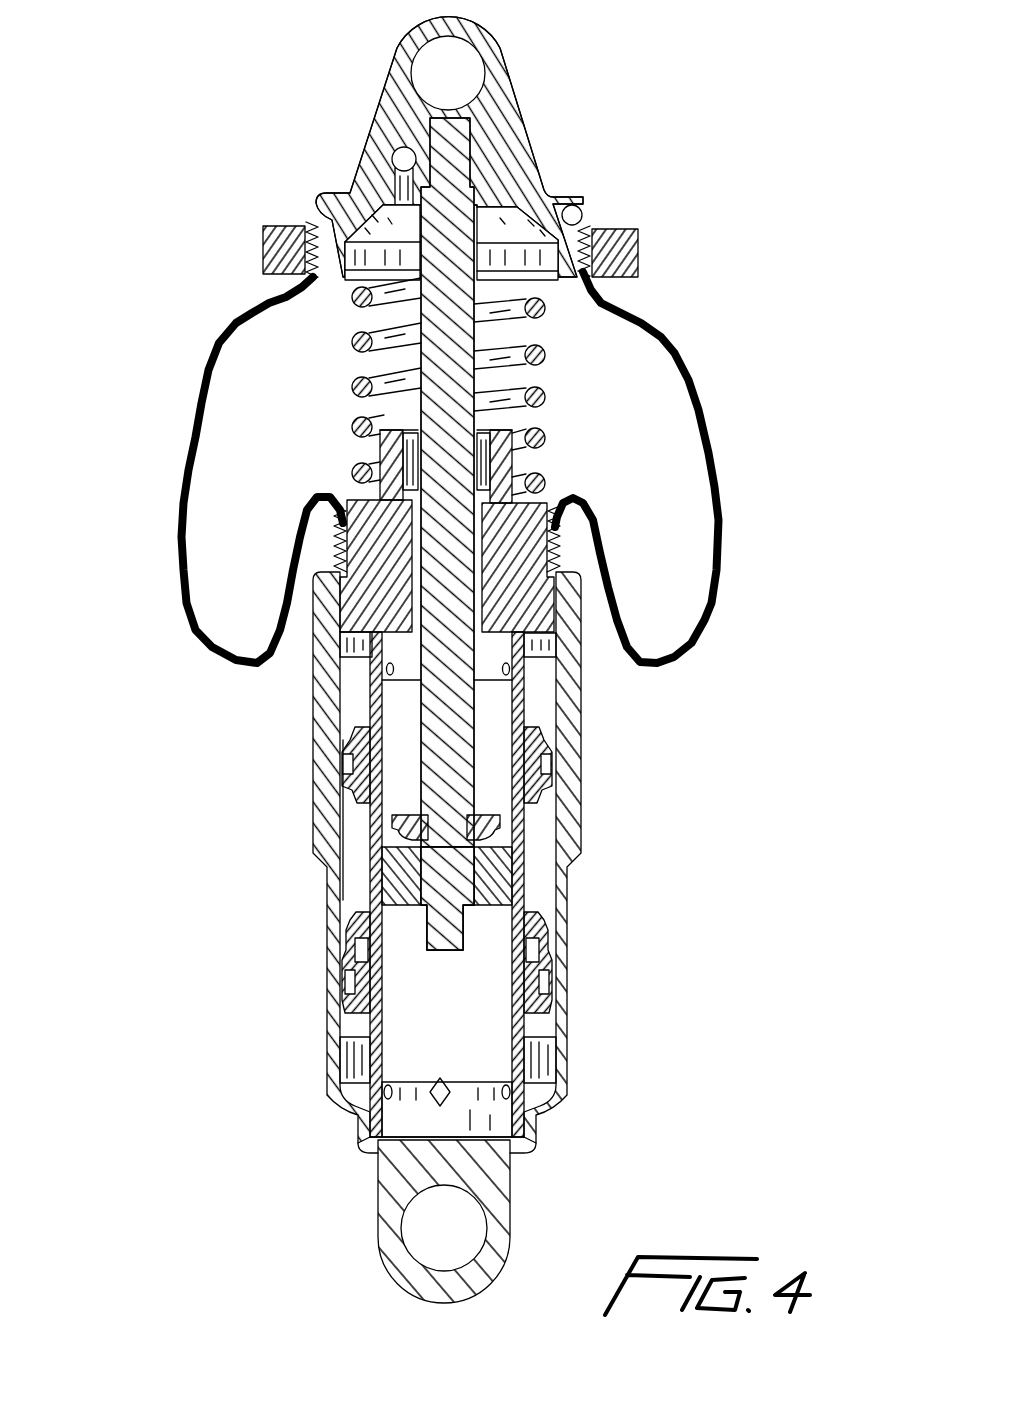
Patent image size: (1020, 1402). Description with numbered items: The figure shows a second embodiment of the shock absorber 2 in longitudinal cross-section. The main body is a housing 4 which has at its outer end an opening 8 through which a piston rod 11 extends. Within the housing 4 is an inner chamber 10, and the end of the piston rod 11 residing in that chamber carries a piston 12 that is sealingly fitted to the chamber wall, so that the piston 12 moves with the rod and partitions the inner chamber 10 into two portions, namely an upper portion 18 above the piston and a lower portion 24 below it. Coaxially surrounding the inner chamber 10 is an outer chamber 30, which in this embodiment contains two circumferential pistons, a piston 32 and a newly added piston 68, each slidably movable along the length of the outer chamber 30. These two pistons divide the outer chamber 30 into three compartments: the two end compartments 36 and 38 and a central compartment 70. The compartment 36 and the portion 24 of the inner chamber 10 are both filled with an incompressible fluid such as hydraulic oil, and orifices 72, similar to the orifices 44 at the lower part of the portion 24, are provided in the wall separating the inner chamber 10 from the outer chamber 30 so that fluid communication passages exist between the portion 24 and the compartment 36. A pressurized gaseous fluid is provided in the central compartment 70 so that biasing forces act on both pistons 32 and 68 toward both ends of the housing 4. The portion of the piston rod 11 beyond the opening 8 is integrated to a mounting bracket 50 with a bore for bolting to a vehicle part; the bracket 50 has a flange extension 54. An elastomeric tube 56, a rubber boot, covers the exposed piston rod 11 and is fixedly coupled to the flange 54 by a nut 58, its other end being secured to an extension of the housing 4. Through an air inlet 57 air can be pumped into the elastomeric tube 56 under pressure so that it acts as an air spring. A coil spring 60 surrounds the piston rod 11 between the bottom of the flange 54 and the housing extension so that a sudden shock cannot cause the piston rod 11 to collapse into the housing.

The shock absorber 2 is at (137, 383).
The housing 4 is at (578, 779).
The opening 8 is at (480, 563).
The inner chamber 10 is at (567, 893).
The piston rod 11 is at (540, 376).
The piston 12 is at (533, 847).
The portion 18 is at (497, 718).
The portion 24 is at (497, 1000).
The outer chamber 30 is at (327, 882).
The piston 32 is at (342, 975).
The compartment 36 is at (357, 693).
The compartment 38 is at (338, 1060).
The orifices 44 is at (362, 1130).
The mounting bracket 50 is at (515, 98).
The flange extension 54 is at (590, 208).
The elastomeric tube 56 is at (708, 388).
The air inlet 57 is at (392, 152).
The nut 58 is at (640, 250).
The coil spring 60 is at (350, 386).
The piston 68 is at (347, 778).
The central compartment 70 is at (353, 837).
The orifices 72 is at (577, 673).